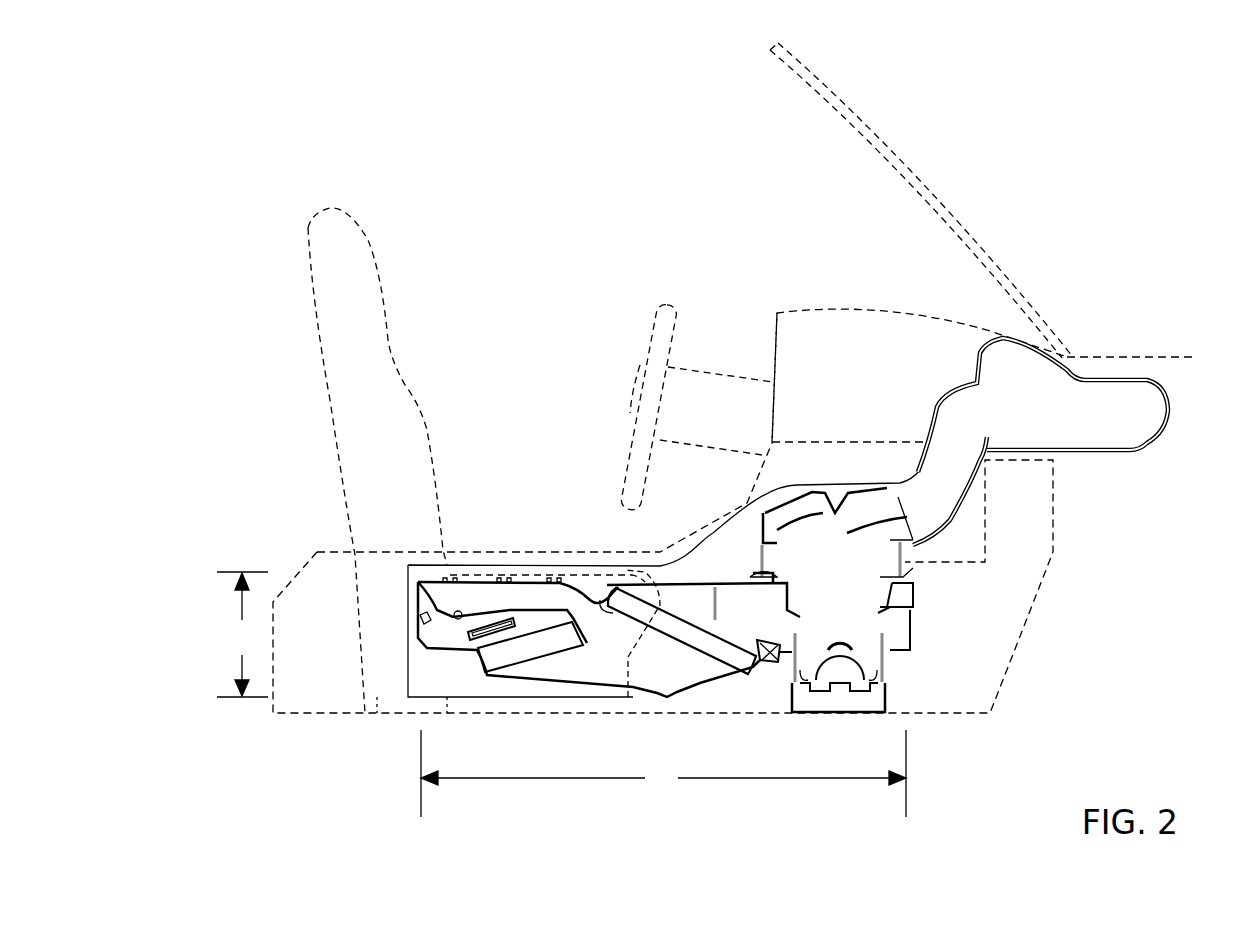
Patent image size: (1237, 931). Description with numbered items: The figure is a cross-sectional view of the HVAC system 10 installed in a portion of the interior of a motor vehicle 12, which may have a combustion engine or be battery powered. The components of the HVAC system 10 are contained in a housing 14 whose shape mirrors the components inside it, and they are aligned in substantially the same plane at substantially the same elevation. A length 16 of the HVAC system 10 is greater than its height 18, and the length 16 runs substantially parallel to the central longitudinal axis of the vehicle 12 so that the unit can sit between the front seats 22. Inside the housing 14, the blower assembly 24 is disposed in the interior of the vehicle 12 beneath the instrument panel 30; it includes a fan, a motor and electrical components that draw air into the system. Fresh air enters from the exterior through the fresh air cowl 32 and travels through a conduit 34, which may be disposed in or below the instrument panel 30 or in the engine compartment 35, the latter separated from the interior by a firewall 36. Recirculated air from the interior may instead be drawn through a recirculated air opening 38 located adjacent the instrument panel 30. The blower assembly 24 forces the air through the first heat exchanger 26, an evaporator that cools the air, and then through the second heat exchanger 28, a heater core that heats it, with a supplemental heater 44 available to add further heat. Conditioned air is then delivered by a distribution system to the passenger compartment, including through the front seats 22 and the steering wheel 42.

The HVAC system 10 is at (609, 594).
The motor vehicle 12 is at (1133, 358).
The housing 14 is at (573, 565).
The length 16 is at (663, 773).
The height 18 is at (242, 634).
The front seats 22 is at (333, 298).
The blower assembly 24 is at (850, 703).
The first heat exchanger 26 is at (720, 650).
The second heat exchanger 28 is at (527, 647).
The instrument panel 30 is at (828, 358).
The fresh air cowl 32 is at (1113, 453).
The conduit 34 is at (960, 507).
The engine compartment 35 is at (1177, 363).
The firewall 36 is at (1022, 632).
The recirculated air opening 38 is at (780, 500).
The steering wheel 42 is at (662, 290).
The supplemental heater 44 is at (477, 650).